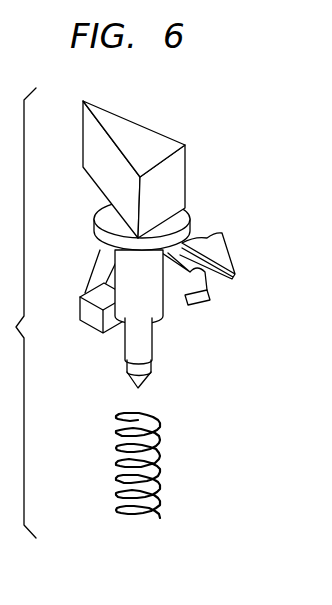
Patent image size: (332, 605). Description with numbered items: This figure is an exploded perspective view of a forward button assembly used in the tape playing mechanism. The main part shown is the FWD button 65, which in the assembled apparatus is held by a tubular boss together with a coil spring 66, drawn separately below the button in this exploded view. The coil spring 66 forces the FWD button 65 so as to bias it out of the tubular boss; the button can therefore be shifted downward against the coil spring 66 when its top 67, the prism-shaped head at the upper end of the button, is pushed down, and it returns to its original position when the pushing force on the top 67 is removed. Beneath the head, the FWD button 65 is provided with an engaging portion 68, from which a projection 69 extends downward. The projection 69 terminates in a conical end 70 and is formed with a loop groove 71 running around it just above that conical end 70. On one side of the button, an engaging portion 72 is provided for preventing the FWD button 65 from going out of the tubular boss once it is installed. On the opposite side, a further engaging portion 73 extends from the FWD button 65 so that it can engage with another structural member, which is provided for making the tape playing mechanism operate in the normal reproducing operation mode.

The FWD button 65 is at (192, 186).
The coil spring 66 is at (162, 467).
The top 67 is at (145, 142).
The engaging portion 68 is at (173, 310).
The projection 69 is at (132, 340).
The conical end 70 is at (148, 383).
The loop groove 71 is at (152, 360).
The engaging portion 72 is at (80, 308).
The engaging portion 73 is at (225, 253).